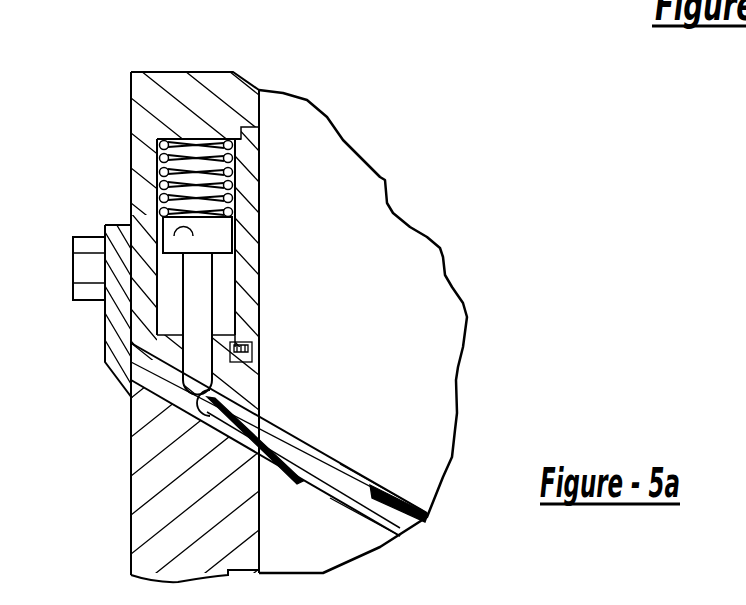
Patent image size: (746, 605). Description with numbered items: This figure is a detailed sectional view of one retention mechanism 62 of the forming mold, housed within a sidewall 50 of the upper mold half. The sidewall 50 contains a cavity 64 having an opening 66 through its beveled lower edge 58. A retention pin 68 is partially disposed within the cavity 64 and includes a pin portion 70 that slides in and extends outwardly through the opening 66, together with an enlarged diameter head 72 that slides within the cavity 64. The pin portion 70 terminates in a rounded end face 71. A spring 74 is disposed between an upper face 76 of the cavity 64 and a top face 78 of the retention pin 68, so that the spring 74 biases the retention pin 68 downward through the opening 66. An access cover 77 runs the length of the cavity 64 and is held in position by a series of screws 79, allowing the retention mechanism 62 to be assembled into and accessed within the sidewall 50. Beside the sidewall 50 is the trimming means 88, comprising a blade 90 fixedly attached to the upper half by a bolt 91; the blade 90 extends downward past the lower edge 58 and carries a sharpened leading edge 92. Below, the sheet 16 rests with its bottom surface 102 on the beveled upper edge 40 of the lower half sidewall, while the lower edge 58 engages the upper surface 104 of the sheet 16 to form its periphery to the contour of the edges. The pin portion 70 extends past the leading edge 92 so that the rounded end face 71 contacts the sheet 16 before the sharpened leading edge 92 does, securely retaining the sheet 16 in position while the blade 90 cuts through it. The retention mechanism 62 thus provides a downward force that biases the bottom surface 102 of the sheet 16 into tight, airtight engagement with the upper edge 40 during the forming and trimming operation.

The sheet 16 is at (388, 491).
The upper edge 40 is at (157, 442).
The sidewall 50 is at (273, 102).
The lower edge 58 is at (230, 410).
The retention mechanism 62 is at (147, 170).
The cavity 64 is at (172, 320).
The opening 66 is at (200, 392).
The retention pin 68 is at (212, 273).
The pin portion 70 is at (131, 385).
The rounded end face 71 is at (230, 417).
The enlarged diameter head 72 is at (218, 232).
The spring 74 is at (192, 147).
The upper face 76 is at (208, 140).
The access cover 77 is at (243, 283).
The top face 78 is at (175, 240).
The screws 79 is at (240, 353).
The trimming means 88 is at (105, 225).
The blade 90 is at (114, 320).
The bolt 91 is at (88, 268).
The sharpened leading edge 92 is at (132, 420).
The bottom surface 102 is at (343, 506).
The upper surface 104 is at (352, 482).